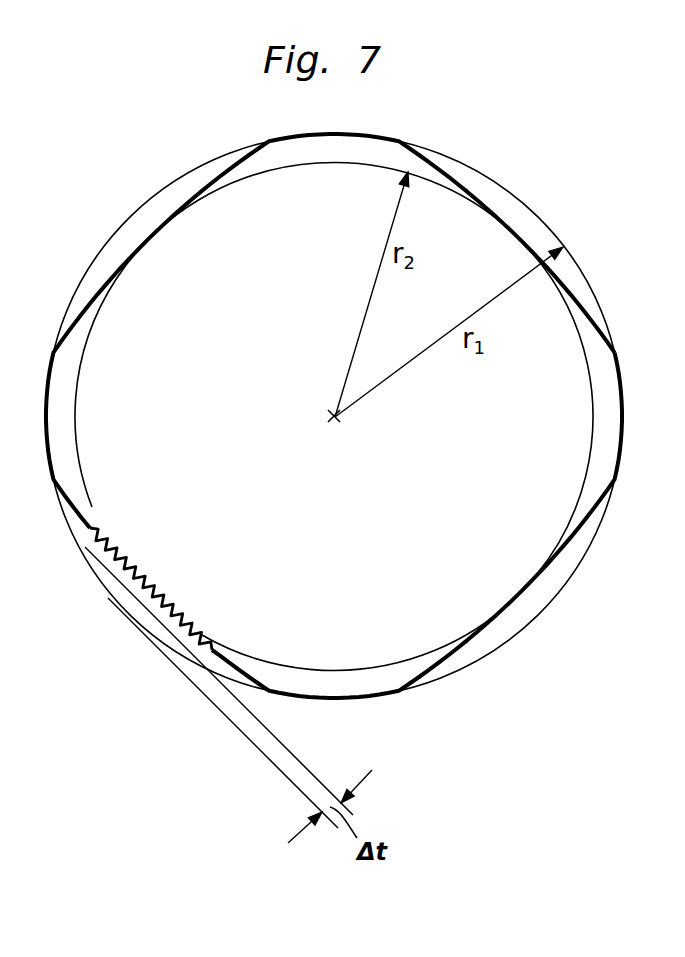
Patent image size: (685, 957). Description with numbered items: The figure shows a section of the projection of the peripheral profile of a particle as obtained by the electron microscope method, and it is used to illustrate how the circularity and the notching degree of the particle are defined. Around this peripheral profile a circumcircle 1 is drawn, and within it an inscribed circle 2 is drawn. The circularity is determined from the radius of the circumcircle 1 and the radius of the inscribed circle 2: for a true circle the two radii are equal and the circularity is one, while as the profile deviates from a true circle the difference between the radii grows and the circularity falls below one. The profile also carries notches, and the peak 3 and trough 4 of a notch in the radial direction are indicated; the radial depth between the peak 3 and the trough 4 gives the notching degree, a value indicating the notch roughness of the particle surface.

The circumcircle 1 is at (507, 187).
The inscribed circle 2 is at (595, 396).
The peak 3 is at (141, 607).
The trough 4 is at (165, 609).